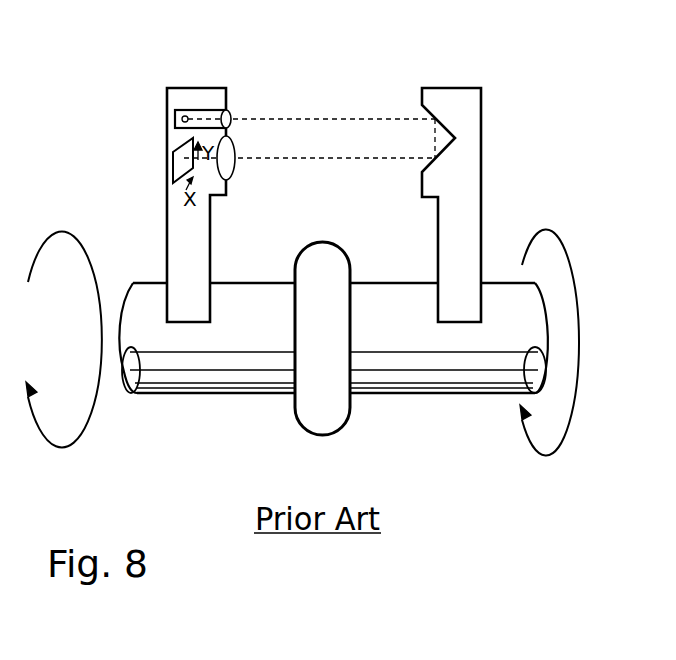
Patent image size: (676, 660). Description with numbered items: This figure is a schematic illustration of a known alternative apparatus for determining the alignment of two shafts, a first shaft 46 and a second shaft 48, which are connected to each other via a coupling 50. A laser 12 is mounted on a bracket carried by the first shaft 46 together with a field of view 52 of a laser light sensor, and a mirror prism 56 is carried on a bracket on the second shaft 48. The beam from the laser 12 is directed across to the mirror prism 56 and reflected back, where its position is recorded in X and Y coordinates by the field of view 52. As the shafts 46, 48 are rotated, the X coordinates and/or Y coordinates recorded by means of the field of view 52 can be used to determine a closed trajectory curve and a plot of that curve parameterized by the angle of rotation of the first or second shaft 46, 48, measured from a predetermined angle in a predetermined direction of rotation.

The laser 12 is at (204, 110).
The field of view 52 is at (173, 173).
The mirror prism 56 is at (485, 88).
The first shaft 46 is at (203, 377).
The second shaft 48 is at (443, 377).
The coupling 50 is at (296, 420).